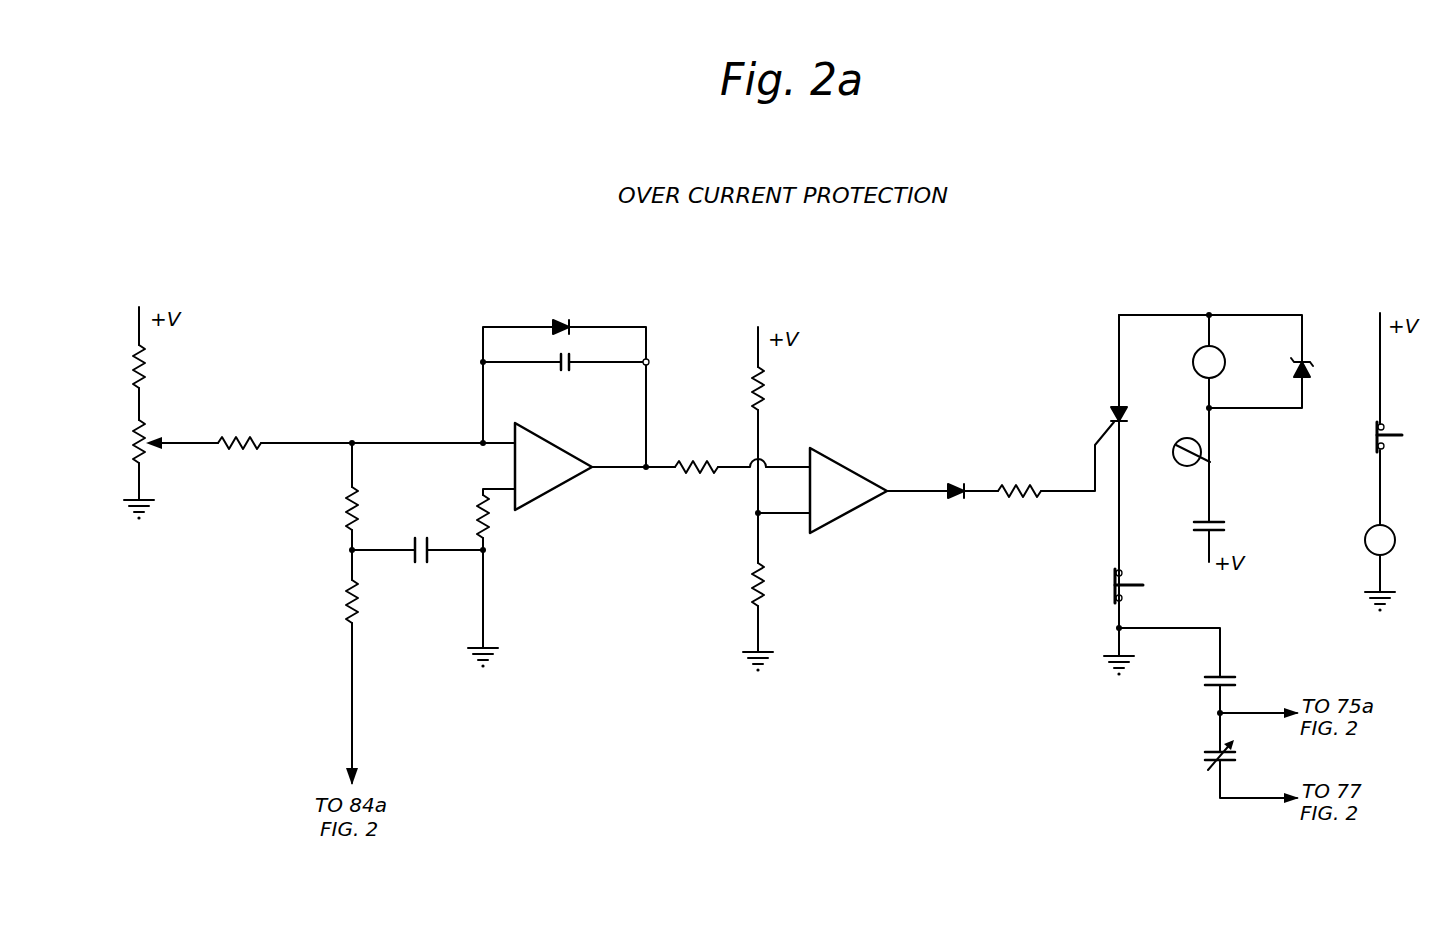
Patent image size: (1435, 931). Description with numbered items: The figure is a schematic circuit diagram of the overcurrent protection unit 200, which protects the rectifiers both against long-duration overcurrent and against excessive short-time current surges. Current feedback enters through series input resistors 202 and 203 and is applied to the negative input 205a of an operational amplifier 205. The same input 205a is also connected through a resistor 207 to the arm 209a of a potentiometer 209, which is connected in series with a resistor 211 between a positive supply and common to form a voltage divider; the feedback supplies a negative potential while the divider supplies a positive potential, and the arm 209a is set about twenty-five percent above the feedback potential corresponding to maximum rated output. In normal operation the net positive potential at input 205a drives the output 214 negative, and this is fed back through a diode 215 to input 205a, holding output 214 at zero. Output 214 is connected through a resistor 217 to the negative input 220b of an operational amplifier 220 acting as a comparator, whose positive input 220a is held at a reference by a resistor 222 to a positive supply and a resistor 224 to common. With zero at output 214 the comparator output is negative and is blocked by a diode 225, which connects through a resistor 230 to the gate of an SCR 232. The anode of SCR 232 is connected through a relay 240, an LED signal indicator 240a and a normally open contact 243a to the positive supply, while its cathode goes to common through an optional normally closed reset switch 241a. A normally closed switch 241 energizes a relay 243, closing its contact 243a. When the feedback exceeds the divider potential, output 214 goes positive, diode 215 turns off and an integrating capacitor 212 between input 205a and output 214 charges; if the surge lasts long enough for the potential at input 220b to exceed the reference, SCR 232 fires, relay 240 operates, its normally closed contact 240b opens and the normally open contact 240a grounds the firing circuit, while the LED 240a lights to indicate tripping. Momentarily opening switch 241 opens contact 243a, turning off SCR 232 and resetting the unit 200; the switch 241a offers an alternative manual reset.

The overcurrent protection unit 200 is at (798, 231).
The input resistor 202 is at (348, 600).
The input resistor 203 is at (348, 513).
The operational amplifier 205 is at (552, 492).
The negative input 205a is at (505, 443).
The resistor 207 is at (243, 450).
The potentiometer 209 is at (140, 440).
The arm 209a is at (159, 436).
The resistor 211 is at (148, 366).
The integrating capacitor 212 is at (573, 368).
The output 214 is at (644, 470).
The diode 215 is at (556, 323).
The resistor 217 is at (695, 462).
The operational amplifier 220 is at (850, 463).
The positive input 220a is at (773, 516).
The negative input 220b is at (797, 467).
The resistor 222 is at (765, 378).
The resistor 224 is at (765, 590).
The diode 225 is at (958, 482).
The resistor 230 is at (1015, 495).
The SCR 232 is at (1111, 410).
The relay 240 is at (1194, 357).
The LED signal indicator 240a is at (1230, 678).
The normally closed contact 240b is at (1213, 752).
The switch 241 is at (1375, 437).
The reset switch 241a is at (1112, 585).
The relay 243 is at (1366, 536).
The normally open contact 243a is at (1220, 522).